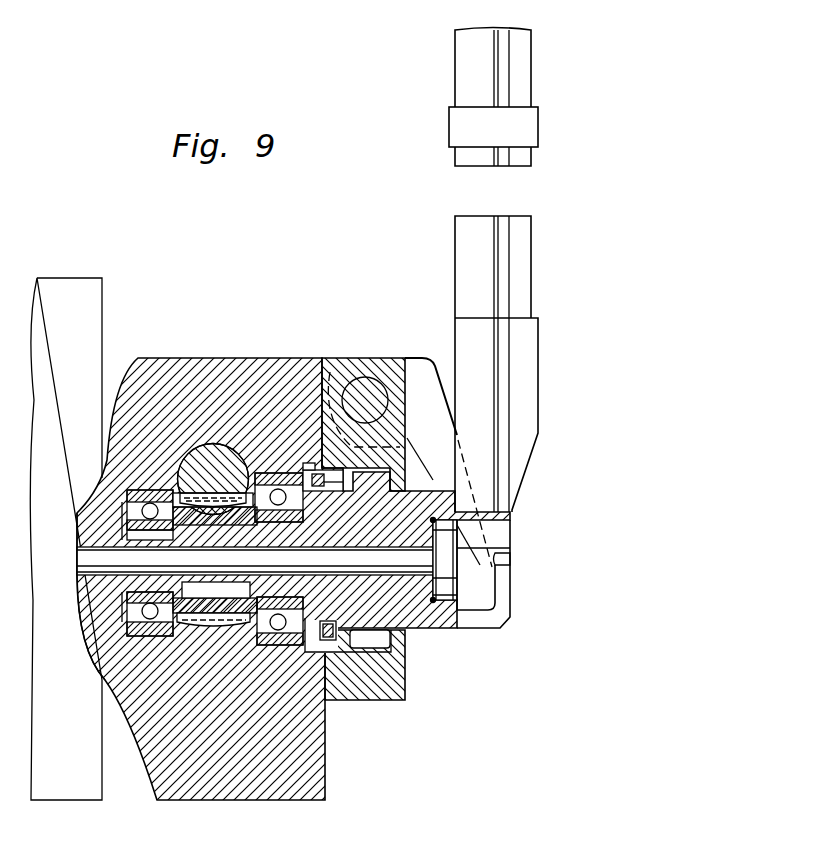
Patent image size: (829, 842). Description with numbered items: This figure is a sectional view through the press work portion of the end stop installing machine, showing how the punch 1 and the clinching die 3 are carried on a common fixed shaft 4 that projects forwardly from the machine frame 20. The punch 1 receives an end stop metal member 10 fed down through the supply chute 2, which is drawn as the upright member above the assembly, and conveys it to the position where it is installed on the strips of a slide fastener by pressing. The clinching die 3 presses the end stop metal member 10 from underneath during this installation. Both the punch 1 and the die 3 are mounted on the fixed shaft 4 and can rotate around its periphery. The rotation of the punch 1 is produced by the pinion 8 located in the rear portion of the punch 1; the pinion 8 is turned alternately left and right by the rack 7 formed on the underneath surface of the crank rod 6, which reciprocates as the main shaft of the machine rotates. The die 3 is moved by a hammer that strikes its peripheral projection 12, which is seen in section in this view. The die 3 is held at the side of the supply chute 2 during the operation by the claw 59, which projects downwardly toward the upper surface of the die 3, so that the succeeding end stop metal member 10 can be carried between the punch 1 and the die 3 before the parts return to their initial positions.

The punch 1 is at (510, 517).
The supply chute 2 is at (460, 83).
The clinching die 3 is at (453, 628).
The fixed shaft 4 is at (77, 560).
The crank rod 6 is at (217, 447).
The rack 7 is at (177, 490).
The pinion 8 is at (248, 490).
The end stop metal member 10 is at (511, 562).
The peripheral projection 12 is at (380, 642).
The machine frame 20 is at (82, 377).
The claw 59 is at (420, 357).